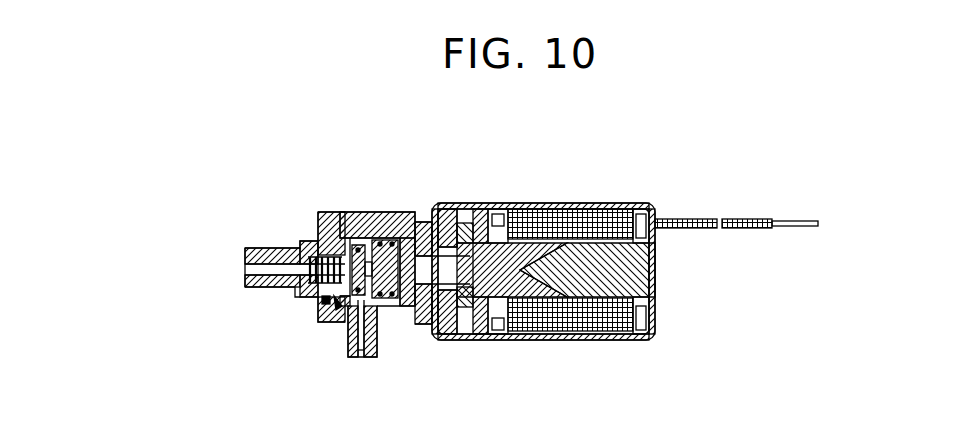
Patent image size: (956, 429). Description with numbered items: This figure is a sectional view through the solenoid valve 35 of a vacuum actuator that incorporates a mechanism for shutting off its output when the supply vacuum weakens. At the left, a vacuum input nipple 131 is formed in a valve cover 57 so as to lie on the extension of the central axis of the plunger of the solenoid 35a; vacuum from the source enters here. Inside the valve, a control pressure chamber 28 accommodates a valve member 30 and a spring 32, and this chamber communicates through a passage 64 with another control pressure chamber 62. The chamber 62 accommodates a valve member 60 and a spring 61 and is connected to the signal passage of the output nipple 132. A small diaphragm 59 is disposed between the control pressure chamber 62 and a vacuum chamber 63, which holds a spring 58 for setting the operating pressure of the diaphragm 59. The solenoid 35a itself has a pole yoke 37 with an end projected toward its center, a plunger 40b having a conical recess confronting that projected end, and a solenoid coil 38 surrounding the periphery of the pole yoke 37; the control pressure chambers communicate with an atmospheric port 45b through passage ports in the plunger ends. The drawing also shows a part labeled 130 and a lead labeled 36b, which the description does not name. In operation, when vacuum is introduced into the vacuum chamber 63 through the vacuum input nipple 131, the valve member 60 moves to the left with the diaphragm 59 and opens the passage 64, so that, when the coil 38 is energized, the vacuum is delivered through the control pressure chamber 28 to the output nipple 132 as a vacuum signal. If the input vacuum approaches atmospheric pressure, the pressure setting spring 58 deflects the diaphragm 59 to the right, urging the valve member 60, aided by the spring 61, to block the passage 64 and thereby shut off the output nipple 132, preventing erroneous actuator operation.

The vacuum input nipple 131 is at (262, 248).
The small diaphragm 59 is at (318, 232).
The spring 58 is at (308, 293).
The valve body 130 is at (390, 212).
The control pressure chamber 62 is at (352, 240).
The spring 61 is at (370, 240).
The vacuum chamber 63 is at (326, 304).
The valve cover 57 is at (337, 308).
The valve member 60 is at (352, 312).
The passage 64 is at (380, 318).
The output nipple 132 is at (360, 358).
The valve member 30 is at (419, 240).
The control pressure chamber 28 is at (445, 338).
The spring 32 is at (420, 330).
The solenoid valve 35 is at (500, 342).
The solenoid 35a is at (612, 391).
The pole yoke 37 is at (614, 240).
The plunger 40b is at (548, 232).
The atmospheric port 45b is at (465, 248).
The solenoid coil 38 is at (625, 332).
The terminal lead 36b is at (746, 219).